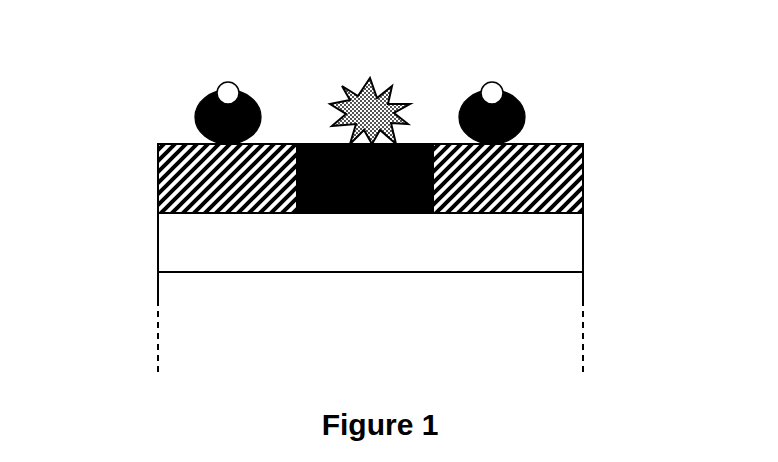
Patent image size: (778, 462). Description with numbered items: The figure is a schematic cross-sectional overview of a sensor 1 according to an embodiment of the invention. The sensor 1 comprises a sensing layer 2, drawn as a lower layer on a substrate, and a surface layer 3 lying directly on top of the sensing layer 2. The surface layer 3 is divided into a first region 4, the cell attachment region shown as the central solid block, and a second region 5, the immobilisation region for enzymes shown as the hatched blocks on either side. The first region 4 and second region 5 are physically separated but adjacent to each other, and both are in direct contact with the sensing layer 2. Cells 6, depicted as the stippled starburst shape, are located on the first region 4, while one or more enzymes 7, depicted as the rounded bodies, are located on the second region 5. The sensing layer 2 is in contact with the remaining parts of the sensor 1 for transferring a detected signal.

The sensor 1 is at (308, 298).
The sensing layer 2 is at (402, 242).
The surface layer 3 is at (403, 178).
The first region 4 is at (365, 178).
The second region 5 is at (370, 178).
The cells 6 is at (370, 85).
The enzyme 7 is at (360, 85).